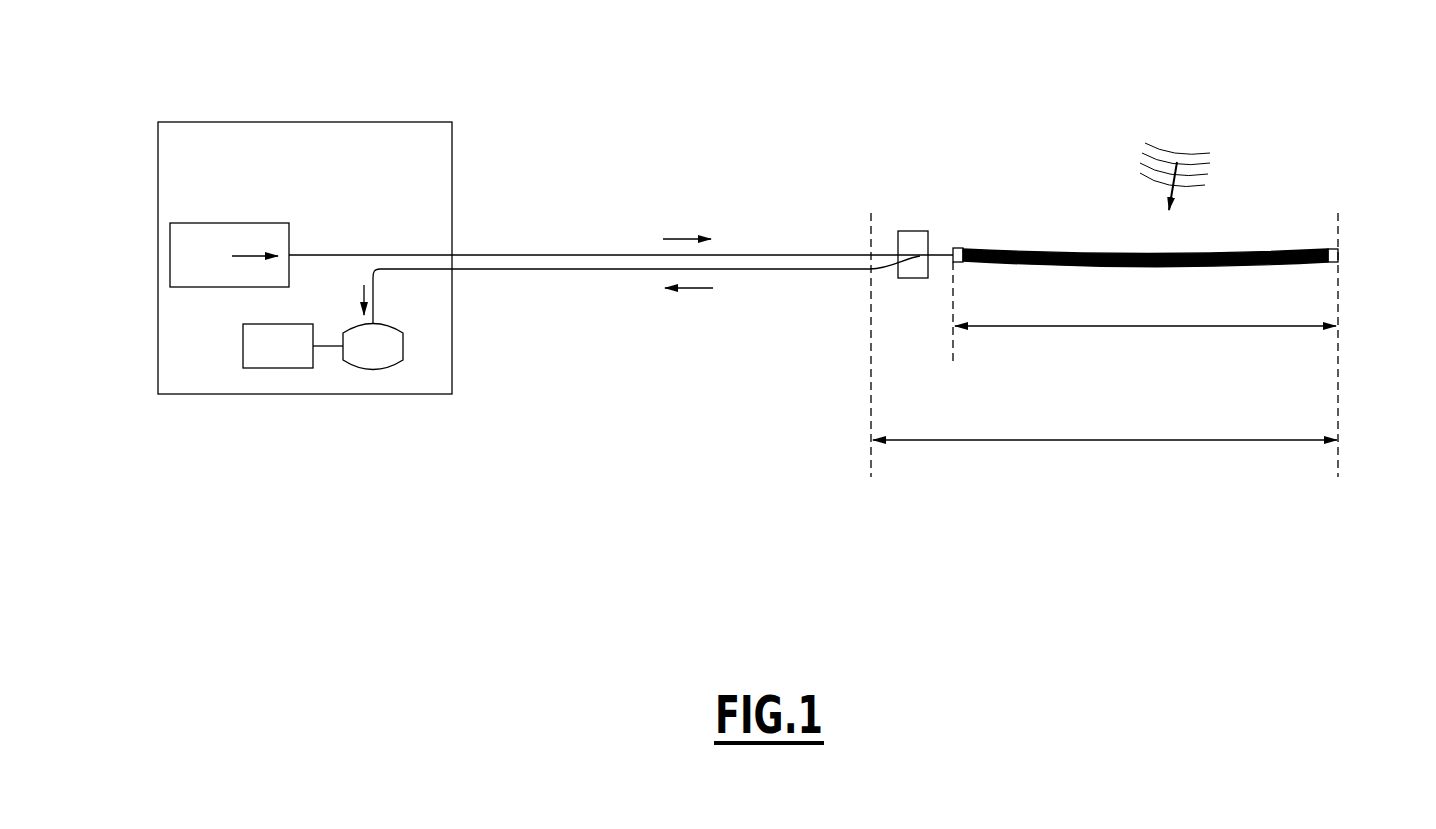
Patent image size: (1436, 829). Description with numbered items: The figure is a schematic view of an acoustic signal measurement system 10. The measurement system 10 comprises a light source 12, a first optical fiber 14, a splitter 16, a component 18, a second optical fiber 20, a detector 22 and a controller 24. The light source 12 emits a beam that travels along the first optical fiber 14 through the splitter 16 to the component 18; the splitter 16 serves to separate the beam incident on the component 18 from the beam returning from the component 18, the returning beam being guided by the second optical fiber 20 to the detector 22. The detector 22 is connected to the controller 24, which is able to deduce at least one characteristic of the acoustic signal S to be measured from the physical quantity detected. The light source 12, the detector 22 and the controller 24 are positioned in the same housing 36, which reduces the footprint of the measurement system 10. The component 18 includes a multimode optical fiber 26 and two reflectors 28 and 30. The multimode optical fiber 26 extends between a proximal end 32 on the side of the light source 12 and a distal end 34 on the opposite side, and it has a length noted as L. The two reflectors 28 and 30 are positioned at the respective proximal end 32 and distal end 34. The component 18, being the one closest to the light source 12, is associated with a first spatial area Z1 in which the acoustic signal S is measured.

The acoustic signal measurement system 10 is at (1069, 94).
The light source 12 is at (183, 266).
The first optical fiber 14 is at (583, 243).
The splitter 16 is at (913, 238).
The component 18 is at (1296, 171).
The second optical fiber 20 is at (577, 279).
The detector 22 is at (368, 350).
The controller 24 is at (274, 357).
The multimode optical fiber 26 is at (1262, 249).
The reflector 28 is at (958, 246).
The reflector 30 is at (1340, 256).
The proximal end 32 is at (964, 269).
The distal end 34 is at (1346, 266).
The housing 36 is at (302, 150).
The length L is at (1138, 330).
The first spatial area Z1 is at (1113, 442).
The acoustic signal S is at (1167, 176).